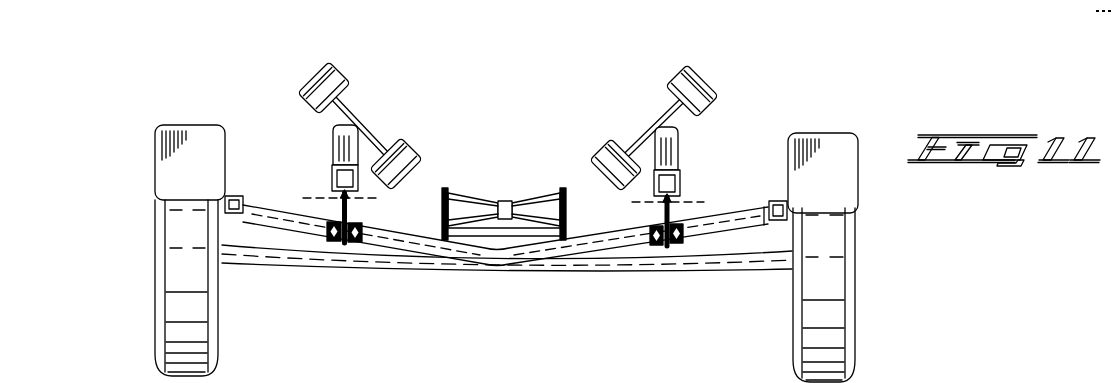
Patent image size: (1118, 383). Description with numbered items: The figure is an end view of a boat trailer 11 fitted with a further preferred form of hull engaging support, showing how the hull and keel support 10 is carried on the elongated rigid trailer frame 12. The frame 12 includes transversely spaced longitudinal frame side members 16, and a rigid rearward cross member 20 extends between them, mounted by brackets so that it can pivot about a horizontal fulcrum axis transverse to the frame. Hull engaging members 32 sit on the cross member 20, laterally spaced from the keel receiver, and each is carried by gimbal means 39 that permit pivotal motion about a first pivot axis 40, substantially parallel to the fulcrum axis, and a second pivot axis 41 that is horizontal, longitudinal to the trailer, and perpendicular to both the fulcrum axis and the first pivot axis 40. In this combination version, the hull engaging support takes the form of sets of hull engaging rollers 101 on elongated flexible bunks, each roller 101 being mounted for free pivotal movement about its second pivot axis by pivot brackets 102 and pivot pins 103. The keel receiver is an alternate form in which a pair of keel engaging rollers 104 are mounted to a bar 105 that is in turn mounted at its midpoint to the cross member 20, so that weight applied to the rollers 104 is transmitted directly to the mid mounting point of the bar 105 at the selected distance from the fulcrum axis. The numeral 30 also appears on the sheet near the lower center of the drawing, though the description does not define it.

The hull and keel support 10 is at (504, 125).
The boat trailer 11 is at (844, 130).
The trailer frame 12 is at (668, 255).
The frame side members 16 is at (232, 198).
The rearward cross member 20 is at (457, 254).
The frame 30 is at (532, 376).
The hull engaging members 32 is at (430, 145).
The gimbal means 39 is at (318, 165).
The first pivot axis 40 is at (362, 199).
The second pivot axis 41 is at (334, 138).
The hull engaging rollers 101 is at (343, 87).
The pivot brackets 102 is at (367, 129).
The pivot pins 103 is at (364, 127).
The keel engaging rollers 104 is at (520, 193).
The bar 105 is at (571, 213).